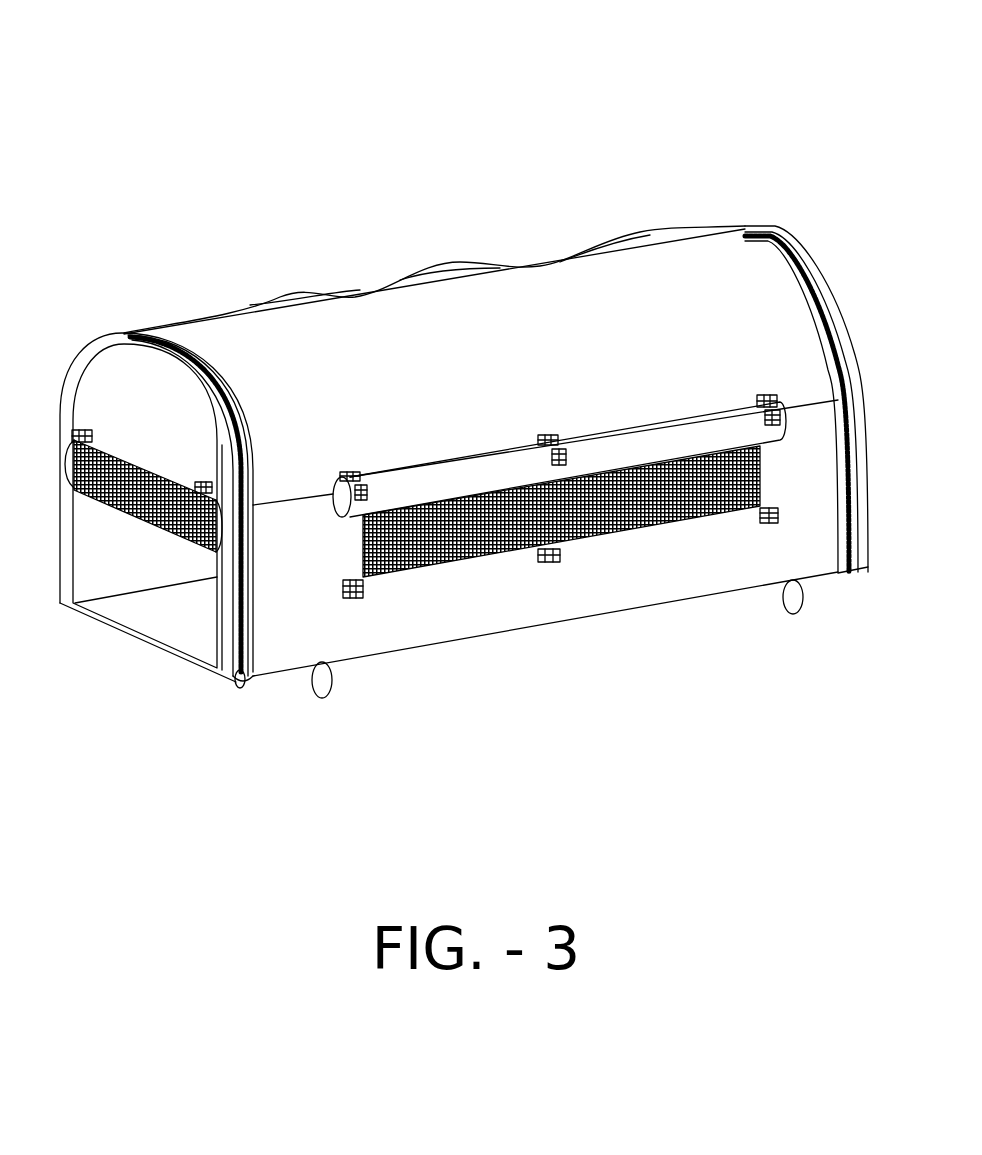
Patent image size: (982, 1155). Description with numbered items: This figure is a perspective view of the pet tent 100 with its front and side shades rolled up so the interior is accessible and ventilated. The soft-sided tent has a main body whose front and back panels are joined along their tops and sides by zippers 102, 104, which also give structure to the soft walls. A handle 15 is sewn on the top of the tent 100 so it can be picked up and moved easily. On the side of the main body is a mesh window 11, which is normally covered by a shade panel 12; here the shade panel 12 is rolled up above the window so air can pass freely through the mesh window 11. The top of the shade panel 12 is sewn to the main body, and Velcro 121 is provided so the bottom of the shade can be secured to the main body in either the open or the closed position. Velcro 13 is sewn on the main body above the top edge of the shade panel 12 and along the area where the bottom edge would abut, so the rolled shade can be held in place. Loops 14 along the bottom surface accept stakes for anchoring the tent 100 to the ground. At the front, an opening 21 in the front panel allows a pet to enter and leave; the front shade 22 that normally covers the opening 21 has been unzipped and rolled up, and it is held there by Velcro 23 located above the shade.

The pet tent 100 is at (458, 158).
The zipper 102 is at (148, 334).
The zipper 104 is at (775, 222).
The handle 15 is at (248, 300).
The shade panel 12 is at (707, 427).
The Velcro 13 is at (350, 470).
The mesh window 11 is at (597, 525).
The Velcro 121 is at (775, 508).
The loop 14 is at (331, 691).
The opening 21 is at (165, 598).
The shade 22 is at (70, 465).
The Velcro 23 is at (87, 434).